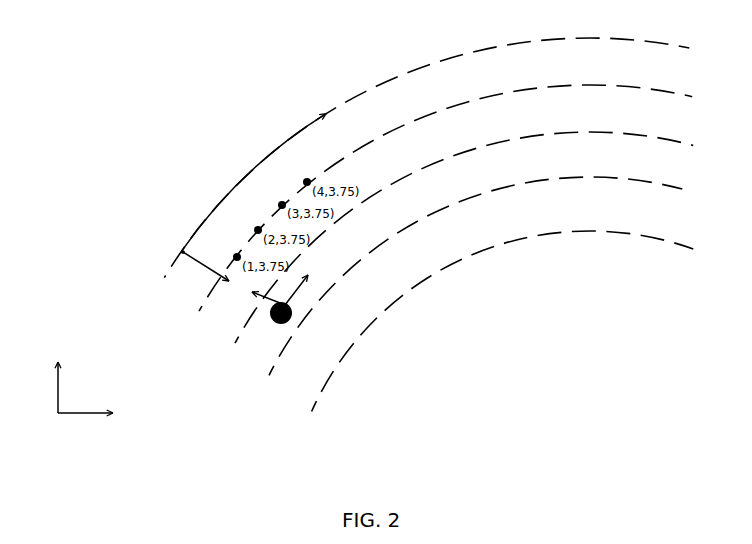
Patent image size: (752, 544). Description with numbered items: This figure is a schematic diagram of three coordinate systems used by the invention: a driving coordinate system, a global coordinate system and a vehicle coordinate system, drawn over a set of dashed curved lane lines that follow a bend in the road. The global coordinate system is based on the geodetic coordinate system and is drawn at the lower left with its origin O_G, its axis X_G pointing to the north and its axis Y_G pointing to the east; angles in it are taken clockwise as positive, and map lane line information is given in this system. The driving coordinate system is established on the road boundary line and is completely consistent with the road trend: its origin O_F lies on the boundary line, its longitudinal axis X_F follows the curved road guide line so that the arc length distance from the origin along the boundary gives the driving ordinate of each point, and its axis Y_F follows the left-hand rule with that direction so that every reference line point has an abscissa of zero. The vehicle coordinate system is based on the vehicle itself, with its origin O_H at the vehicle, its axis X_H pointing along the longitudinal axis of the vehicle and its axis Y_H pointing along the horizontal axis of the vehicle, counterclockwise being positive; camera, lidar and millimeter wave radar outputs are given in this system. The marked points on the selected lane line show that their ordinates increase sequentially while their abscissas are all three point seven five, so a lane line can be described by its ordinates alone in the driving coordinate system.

The driving coordinate origin OF is at (170, 247).
The longitudinal axis of the driving coordinate system XF is at (254, 168).
The driving coordinate system abscissa axis YF is at (206, 273).
The vehicle coordinate system origin OH is at (283, 319).
The vehicle longitudinal axis XH is at (312, 278).
The vehicle horizontal axis YH is at (250, 304).
The global coordinate system origin OG is at (61, 434).
The global north axis XG is at (62, 376).
The global east axis YG is at (101, 420).